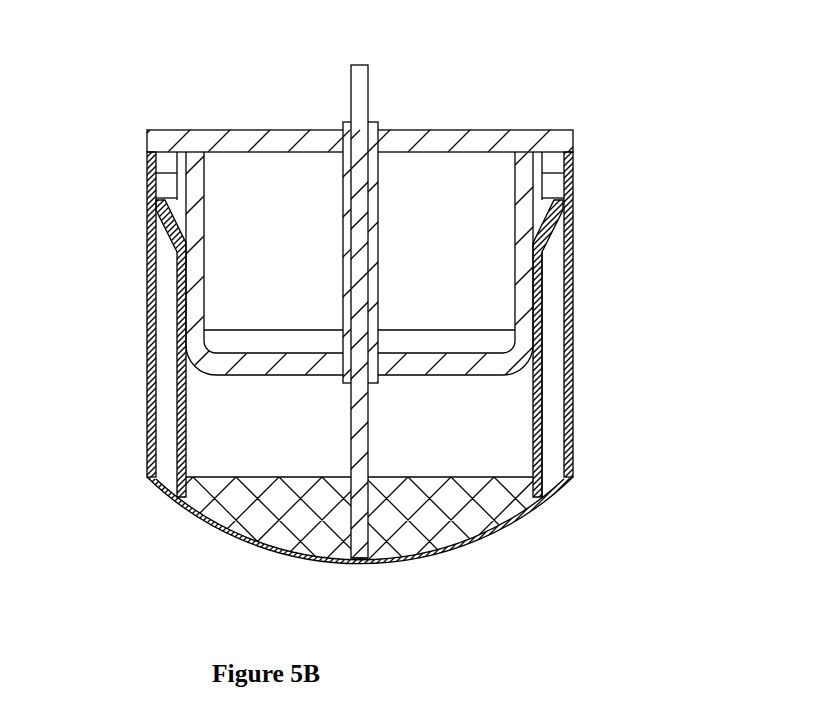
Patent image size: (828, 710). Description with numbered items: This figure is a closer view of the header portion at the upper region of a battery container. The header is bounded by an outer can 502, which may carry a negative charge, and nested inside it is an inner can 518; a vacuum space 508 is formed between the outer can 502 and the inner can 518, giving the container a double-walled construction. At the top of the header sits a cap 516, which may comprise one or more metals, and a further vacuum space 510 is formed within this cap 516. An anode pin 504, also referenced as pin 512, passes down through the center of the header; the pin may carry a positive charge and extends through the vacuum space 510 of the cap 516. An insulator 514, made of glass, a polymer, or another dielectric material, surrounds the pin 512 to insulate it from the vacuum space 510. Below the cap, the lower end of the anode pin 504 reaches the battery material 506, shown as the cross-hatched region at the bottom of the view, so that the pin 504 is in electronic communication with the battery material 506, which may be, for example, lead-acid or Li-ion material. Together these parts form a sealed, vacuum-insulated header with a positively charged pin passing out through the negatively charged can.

The outer can 502 is at (152, 398).
The anode pin 504 is at (360, 537).
The battery material 506 is at (427, 527).
The vacuum space 508 is at (552, 358).
The vacuum space 510 is at (465, 247).
The pin 512 is at (369, 75).
The insulator 514 is at (343, 117).
The cap 516 is at (212, 142).
The inner can 518 is at (545, 442).